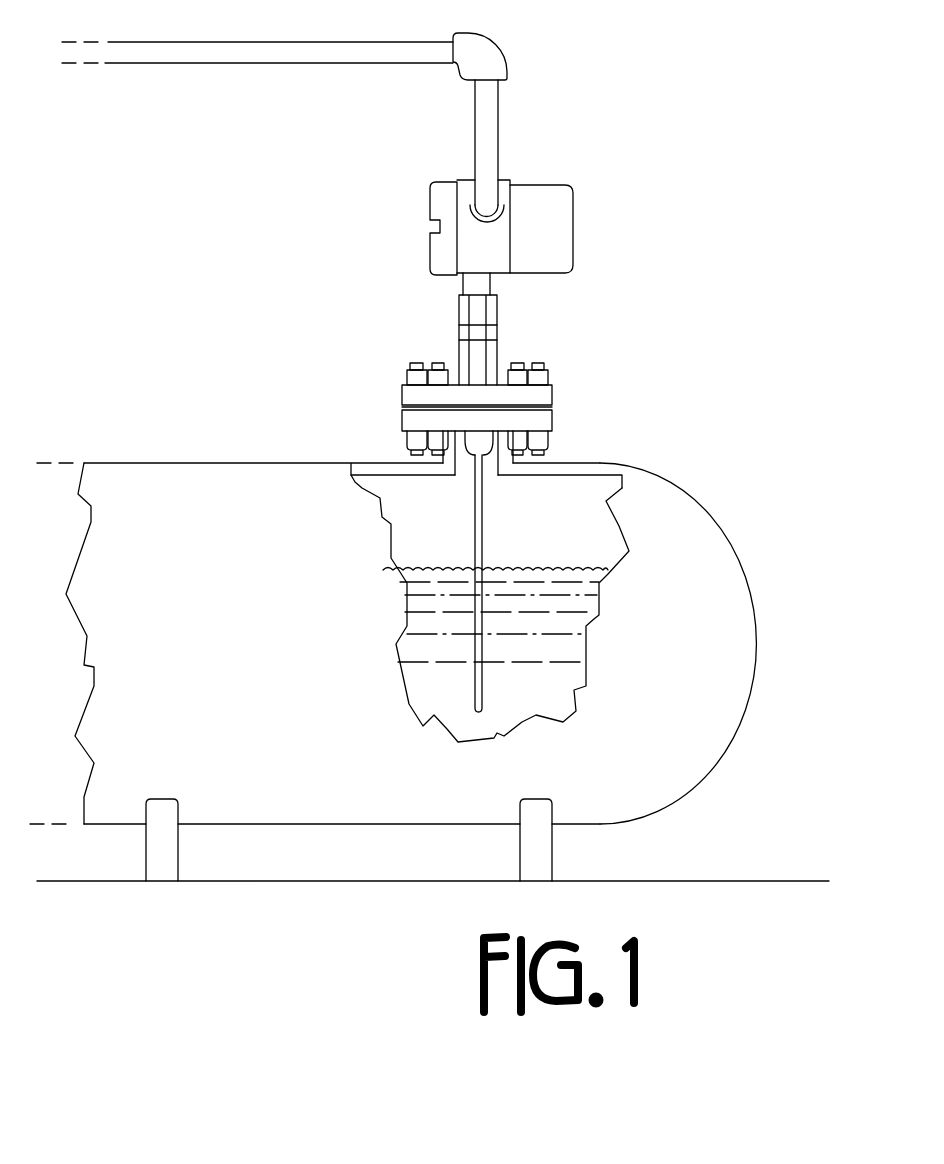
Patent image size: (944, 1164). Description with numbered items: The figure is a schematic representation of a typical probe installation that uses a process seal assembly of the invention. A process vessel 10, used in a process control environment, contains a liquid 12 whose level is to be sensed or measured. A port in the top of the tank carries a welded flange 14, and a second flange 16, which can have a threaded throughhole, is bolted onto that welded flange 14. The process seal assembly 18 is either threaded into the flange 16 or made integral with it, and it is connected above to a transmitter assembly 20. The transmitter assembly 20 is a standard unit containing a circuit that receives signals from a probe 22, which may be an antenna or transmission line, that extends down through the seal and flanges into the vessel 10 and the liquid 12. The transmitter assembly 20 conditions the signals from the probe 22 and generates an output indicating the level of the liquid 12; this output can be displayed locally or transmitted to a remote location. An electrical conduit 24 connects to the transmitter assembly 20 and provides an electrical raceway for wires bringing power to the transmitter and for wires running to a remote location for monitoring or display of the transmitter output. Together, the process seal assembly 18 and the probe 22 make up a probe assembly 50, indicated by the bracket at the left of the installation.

The process vessel 10 is at (699, 506).
The liquid 12 is at (598, 594).
The welded flange 14 is at (552, 418).
The flange 16 is at (552, 392).
The process seal assembly 18 is at (498, 348).
The transmitter assembly 20 is at (576, 193).
The probe 22 is at (483, 515).
The electrical conduit 24 is at (155, 63).
The probe assembly 50 is at (474, 528).